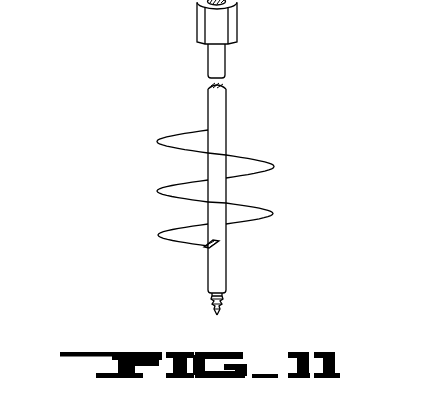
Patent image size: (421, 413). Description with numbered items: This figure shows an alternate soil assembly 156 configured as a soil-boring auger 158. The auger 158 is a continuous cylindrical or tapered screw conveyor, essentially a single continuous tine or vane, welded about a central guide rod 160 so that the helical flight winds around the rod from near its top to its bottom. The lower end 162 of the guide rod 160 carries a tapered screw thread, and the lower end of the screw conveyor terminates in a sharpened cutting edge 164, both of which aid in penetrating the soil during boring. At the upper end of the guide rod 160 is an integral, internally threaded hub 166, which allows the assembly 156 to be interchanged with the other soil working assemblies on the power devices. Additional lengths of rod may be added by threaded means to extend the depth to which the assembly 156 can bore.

The soil assembly 156 is at (199, 158).
The soil-boring auger 158 is at (275, 167).
The central guide rod 160 is at (221, 122).
The lower end of guide rod 162 is at (221, 300).
The sharpened cutting edge 164 is at (220, 247).
The internally threaded hub 166 is at (237, 20).